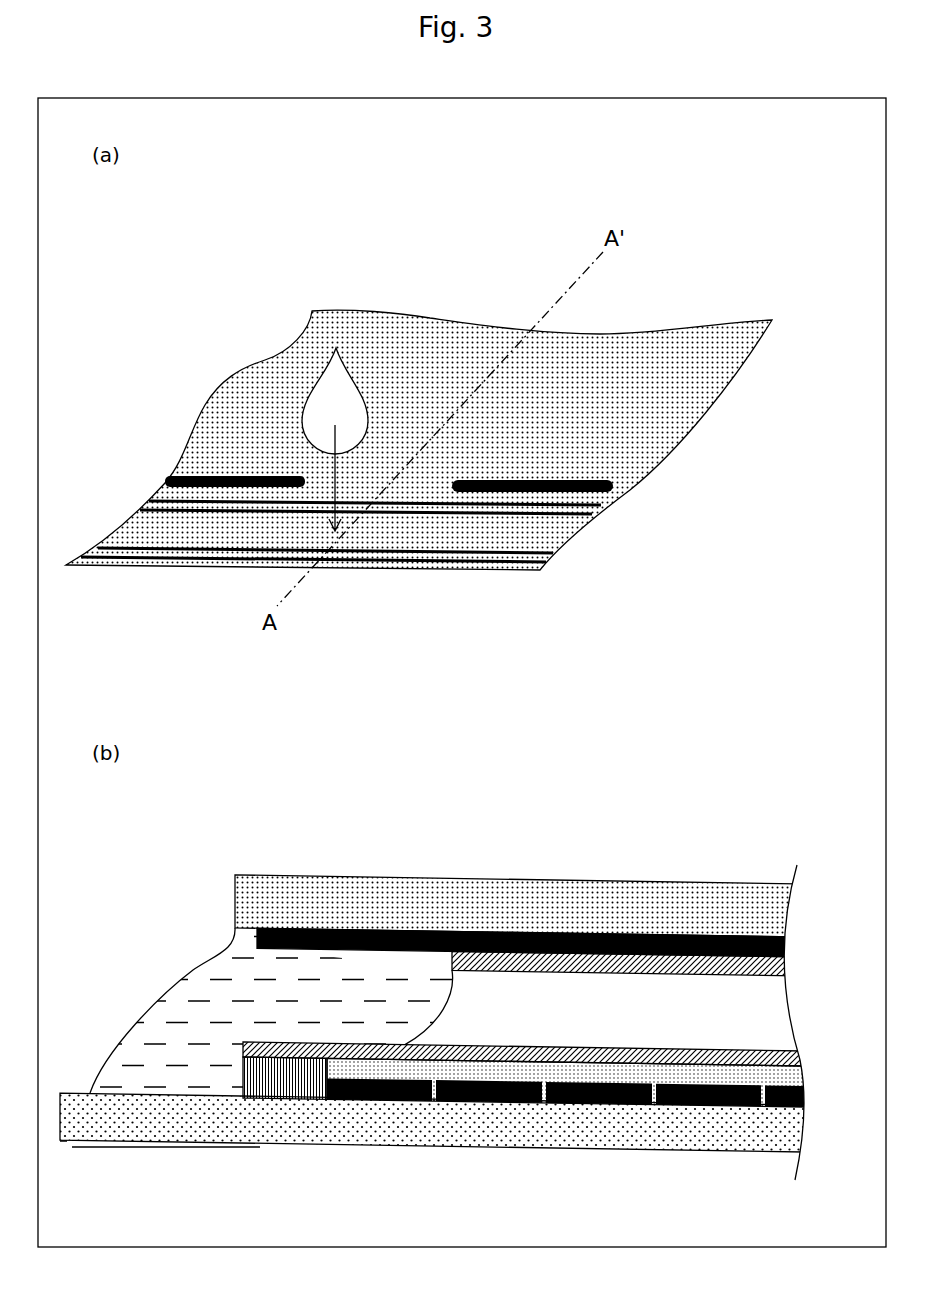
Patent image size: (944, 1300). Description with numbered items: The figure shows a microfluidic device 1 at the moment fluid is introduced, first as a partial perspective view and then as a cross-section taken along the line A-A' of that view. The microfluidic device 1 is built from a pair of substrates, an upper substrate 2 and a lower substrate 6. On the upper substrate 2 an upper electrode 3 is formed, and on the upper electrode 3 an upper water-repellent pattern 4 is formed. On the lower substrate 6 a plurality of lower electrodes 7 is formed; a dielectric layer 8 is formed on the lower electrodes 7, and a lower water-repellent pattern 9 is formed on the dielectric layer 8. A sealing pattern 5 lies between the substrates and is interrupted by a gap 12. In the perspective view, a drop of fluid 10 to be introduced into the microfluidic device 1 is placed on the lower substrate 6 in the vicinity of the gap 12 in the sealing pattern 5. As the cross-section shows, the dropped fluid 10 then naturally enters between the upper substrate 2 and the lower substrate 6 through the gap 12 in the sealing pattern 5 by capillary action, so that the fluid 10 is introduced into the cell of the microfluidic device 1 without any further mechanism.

The microfluidic device 1 is at (796, 213).
The upper substrate 2 is at (661, 350).
The upper electrode 3 is at (418, 940).
The upper water-repellent pattern 4 is at (742, 963).
The sealing pattern 5 is at (527, 492).
The lower substrate 6 is at (473, 566).
The lower electrodes 7 is at (733, 1103).
The dielectric layer 8 is at (283, 1090).
The lower water-repellent pattern 9 is at (740, 1057).
The fluid 10 is at (322, 415).
The gap 12 is at (420, 490).